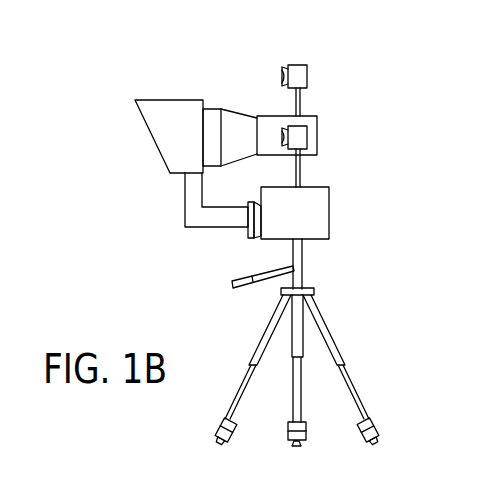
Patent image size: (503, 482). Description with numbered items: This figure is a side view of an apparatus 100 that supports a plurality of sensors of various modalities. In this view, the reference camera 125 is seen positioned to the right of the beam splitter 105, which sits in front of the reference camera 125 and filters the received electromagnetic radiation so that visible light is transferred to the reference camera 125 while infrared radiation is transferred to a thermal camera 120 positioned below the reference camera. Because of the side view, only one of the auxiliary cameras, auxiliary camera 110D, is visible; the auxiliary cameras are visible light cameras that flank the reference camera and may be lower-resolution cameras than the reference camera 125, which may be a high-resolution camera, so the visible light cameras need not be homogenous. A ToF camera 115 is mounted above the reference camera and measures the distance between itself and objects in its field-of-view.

The apparatus 100 is at (374, 60).
The beam splitter 105 is at (185, 196).
The auxiliary camera 110D is at (307, 128).
The ToF camera 115 is at (298, 65).
The thermal camera 120 is at (329, 217).
The reference camera 125 is at (273, 117).